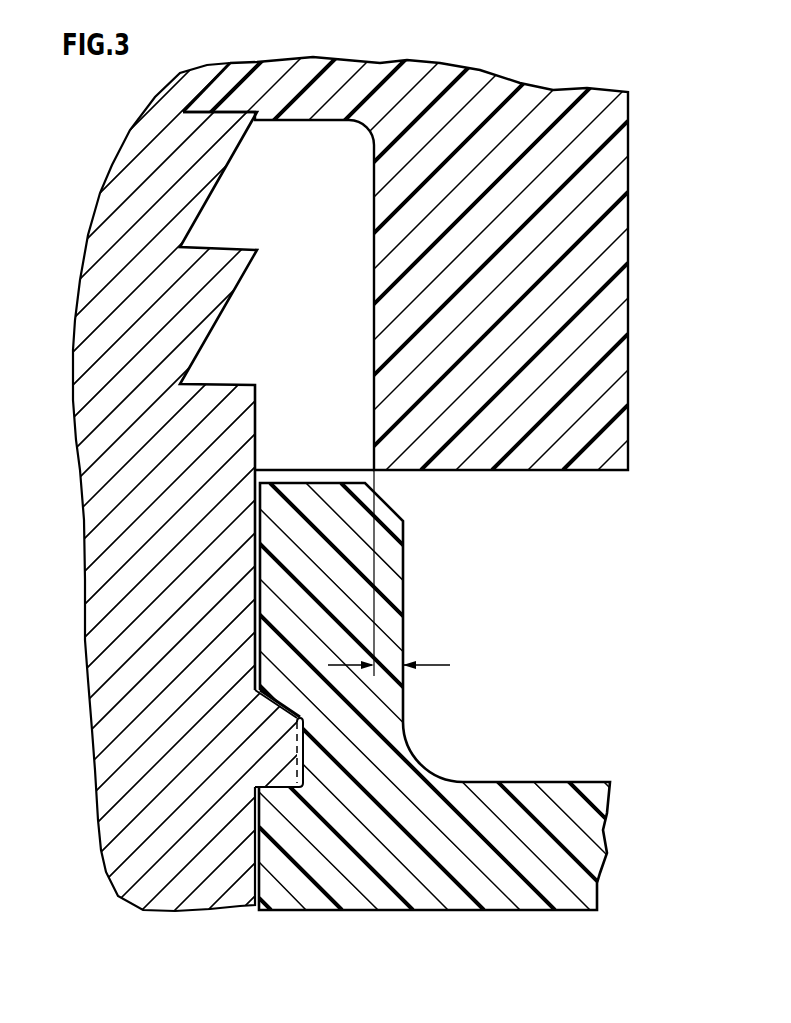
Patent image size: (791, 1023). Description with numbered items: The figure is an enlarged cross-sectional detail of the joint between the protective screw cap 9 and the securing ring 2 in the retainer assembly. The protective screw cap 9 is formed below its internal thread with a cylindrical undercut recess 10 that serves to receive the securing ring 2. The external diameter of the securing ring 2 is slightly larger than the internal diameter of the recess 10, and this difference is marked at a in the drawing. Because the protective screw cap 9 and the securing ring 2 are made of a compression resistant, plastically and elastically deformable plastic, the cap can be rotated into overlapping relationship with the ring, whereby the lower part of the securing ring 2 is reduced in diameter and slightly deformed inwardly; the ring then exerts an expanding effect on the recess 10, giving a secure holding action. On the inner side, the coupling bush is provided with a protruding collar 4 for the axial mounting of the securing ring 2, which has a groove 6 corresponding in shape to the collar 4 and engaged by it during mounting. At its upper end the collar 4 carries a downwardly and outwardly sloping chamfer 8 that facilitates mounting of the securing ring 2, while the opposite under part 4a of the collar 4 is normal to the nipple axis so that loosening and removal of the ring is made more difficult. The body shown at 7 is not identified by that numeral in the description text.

The securing ring 2 is at (392, 585).
The protruding collar 4 is at (287, 760).
The under part of the collar 4a is at (283, 791).
The groove 6 is at (304, 748).
The pipe socket body 7 is at (88, 682).
The chamfer 8 is at (272, 706).
The protective screw cap 9 is at (628, 268).
The cylindrical undercut recess 10 is at (373, 375).
The diameter difference a is at (389, 665).